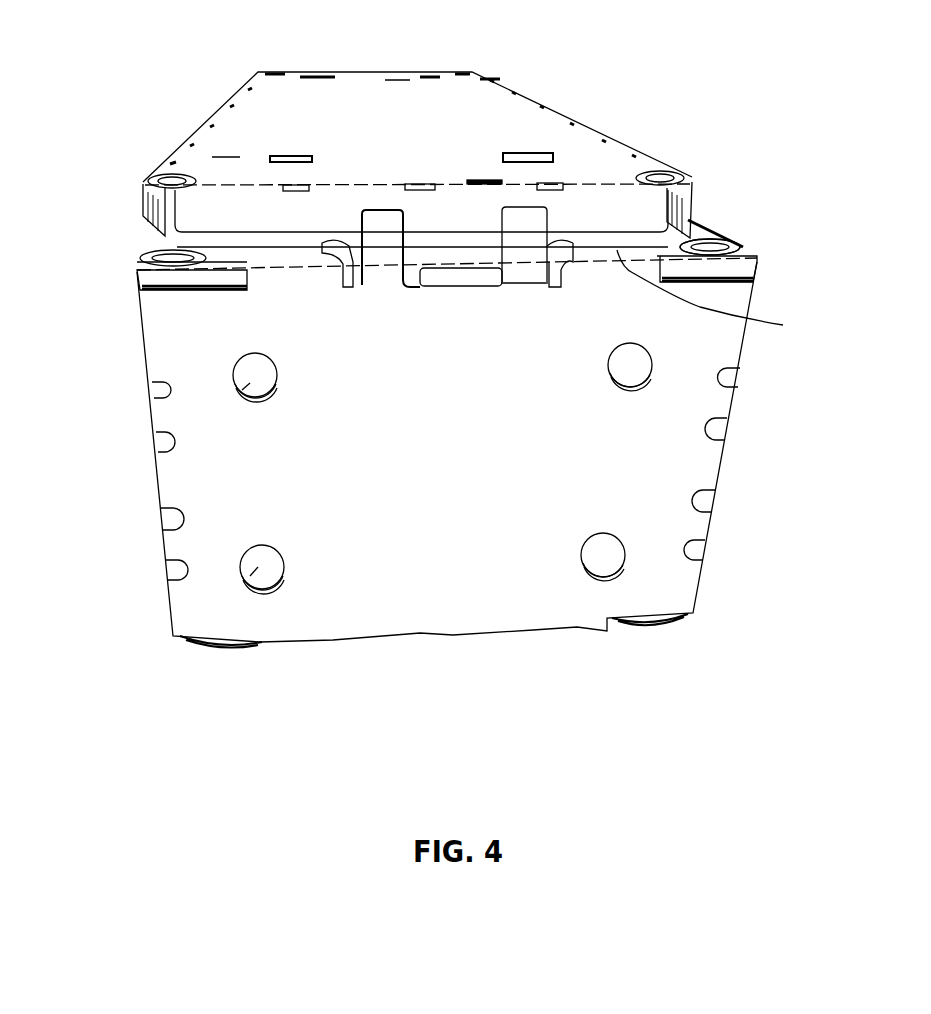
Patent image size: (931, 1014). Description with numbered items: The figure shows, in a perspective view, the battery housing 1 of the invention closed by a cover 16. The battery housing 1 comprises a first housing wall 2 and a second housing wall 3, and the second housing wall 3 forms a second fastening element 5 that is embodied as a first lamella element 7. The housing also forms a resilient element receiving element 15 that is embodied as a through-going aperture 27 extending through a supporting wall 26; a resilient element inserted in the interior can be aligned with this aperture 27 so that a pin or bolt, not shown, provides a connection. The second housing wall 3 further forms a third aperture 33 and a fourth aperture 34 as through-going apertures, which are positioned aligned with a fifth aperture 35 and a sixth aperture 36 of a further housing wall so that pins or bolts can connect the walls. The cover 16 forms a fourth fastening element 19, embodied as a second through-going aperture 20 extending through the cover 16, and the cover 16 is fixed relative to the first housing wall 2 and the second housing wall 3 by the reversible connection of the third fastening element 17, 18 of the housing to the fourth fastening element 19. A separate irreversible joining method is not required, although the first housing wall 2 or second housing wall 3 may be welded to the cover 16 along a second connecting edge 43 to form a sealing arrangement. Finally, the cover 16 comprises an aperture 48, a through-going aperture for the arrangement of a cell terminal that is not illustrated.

The battery housing 1 is at (436, 392).
The first housing wall 2 is at (436, 427).
The second housing wall 3 is at (390, 468).
The second fastening element 5 is at (738, 464).
The first lamella element 7 is at (710, 527).
The resilient element receiving element 15 is at (746, 218).
The through-going aperture 27 is at (711, 248).
The cover 16 is at (380, 365).
The third fastening element 17 is at (376, 262).
The cover flange 18 is at (150, 217).
The fourth fastening element 19 is at (206, 161).
The second through-going aperture 20 is at (353, 178).
The supporting wall 26 is at (714, 296).
The third aperture 33 is at (172, 584).
The fifth aperture 35 is at (260, 570).
The fourth aperture 34 is at (168, 393).
The sixth aperture 36 is at (243, 387).
The second connecting edge 43 is at (453, 190).
The aperture 48 is at (537, 153).